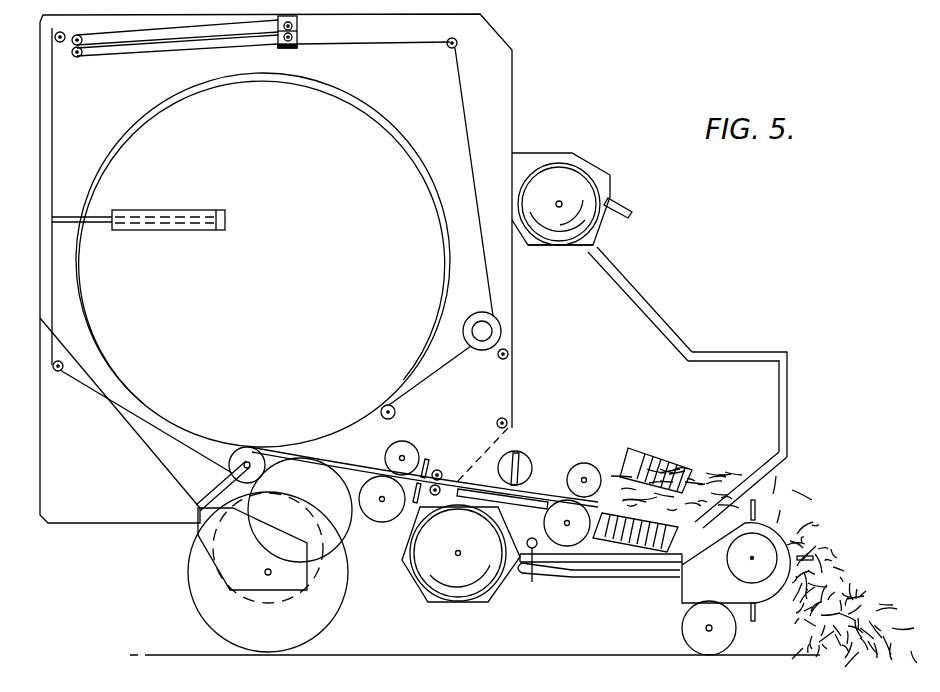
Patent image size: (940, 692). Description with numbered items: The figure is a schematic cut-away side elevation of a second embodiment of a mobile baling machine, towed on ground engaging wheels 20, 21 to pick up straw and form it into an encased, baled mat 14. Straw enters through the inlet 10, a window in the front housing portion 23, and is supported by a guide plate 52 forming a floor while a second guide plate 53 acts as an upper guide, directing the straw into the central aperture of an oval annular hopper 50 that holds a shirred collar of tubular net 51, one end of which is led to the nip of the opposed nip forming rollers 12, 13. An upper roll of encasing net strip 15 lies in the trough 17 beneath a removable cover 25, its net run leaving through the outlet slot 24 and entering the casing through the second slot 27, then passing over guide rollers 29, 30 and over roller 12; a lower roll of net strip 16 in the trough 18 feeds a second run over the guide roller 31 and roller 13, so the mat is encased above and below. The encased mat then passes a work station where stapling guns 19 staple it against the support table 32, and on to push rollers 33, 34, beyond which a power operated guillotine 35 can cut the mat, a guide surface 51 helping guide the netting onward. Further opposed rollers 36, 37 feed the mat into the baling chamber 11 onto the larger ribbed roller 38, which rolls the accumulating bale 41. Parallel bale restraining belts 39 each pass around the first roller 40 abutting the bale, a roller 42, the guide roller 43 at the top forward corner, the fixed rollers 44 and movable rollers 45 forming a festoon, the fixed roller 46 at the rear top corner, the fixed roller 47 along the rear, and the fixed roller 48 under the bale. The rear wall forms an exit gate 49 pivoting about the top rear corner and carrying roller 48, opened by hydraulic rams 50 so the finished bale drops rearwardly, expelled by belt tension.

The inlet 10 is at (780, 480).
The baling chamber 11 is at (58, 186).
The nip forming roller 12 is at (587, 463).
The nip forming roller 13 is at (572, 546).
The mat 14 is at (338, 470).
The upper roll of encasing net strip 15 is at (573, 178).
The lower roll of encasing net strip 16 is at (462, 585).
The roll containing trough 17 is at (534, 246).
The roll containing trough 18 is at (489, 605).
The stapling gun 19 is at (523, 459).
The ground engaging wheel 20 is at (205, 583).
The ground engaging wheel 21 is at (684, 629).
The front housing portion 23 is at (788, 395).
The outlet slot 24 is at (632, 214).
The removable cover 25 is at (610, 172).
The second slot 27 is at (600, 252).
The guide roller 29 is at (509, 354).
The guide roller 30 is at (508, 422).
The guide roller 31 is at (600, 572).
The support table 32 is at (502, 506).
The push roller 33 is at (441, 472).
The push roller 34 is at (432, 496).
The power operated guillotine 35 is at (431, 462).
The opposed roller 36 is at (407, 443).
The opposed roller 37 is at (381, 522).
The ribbed roller 38 is at (282, 530).
The bale restraining belt 39 is at (375, 44).
The first roller 40 is at (381, 409).
The accumulating bale 41 is at (278, 282).
The roller 42 is at (480, 322).
The guide roller 43 is at (458, 45).
The fixed rollers 44 is at (78, 57).
The movable rollers 45 is at (298, 34).
The fixed roller 46 is at (55, 38).
The fixed roller 47 is at (57, 372).
The fixed roller 48 is at (250, 460).
The exit gate 49 is at (52, 430).
The oval annular hopper 50 is at (185, 210).
The tubular net 51 is at (680, 462).
The guide plate 52 is at (680, 585).
The second guide plate 53 is at (740, 468).